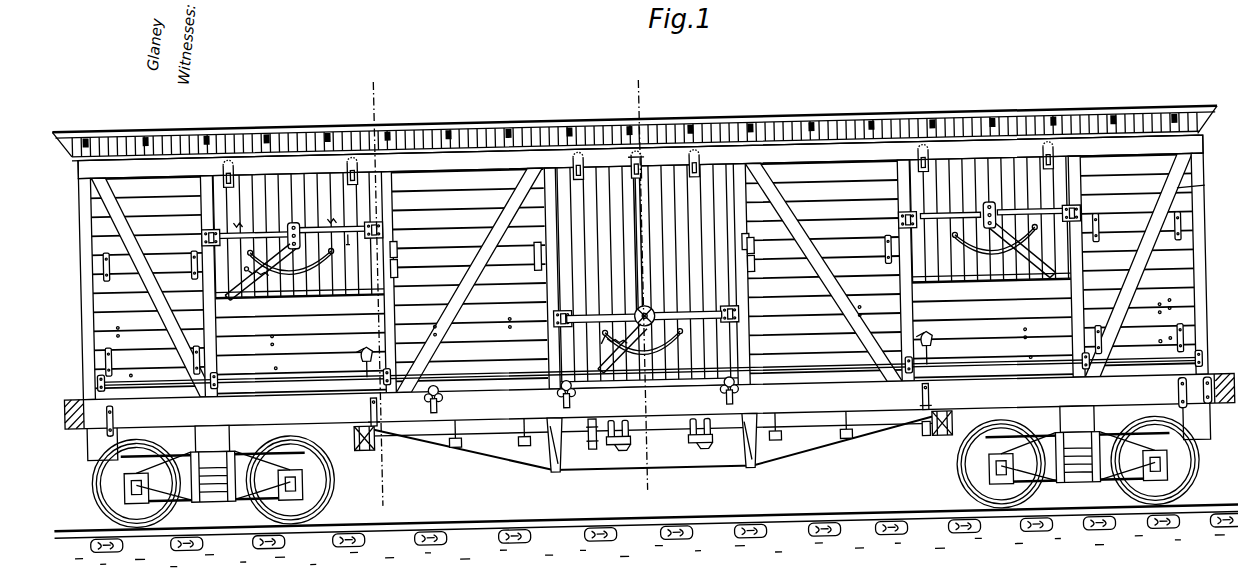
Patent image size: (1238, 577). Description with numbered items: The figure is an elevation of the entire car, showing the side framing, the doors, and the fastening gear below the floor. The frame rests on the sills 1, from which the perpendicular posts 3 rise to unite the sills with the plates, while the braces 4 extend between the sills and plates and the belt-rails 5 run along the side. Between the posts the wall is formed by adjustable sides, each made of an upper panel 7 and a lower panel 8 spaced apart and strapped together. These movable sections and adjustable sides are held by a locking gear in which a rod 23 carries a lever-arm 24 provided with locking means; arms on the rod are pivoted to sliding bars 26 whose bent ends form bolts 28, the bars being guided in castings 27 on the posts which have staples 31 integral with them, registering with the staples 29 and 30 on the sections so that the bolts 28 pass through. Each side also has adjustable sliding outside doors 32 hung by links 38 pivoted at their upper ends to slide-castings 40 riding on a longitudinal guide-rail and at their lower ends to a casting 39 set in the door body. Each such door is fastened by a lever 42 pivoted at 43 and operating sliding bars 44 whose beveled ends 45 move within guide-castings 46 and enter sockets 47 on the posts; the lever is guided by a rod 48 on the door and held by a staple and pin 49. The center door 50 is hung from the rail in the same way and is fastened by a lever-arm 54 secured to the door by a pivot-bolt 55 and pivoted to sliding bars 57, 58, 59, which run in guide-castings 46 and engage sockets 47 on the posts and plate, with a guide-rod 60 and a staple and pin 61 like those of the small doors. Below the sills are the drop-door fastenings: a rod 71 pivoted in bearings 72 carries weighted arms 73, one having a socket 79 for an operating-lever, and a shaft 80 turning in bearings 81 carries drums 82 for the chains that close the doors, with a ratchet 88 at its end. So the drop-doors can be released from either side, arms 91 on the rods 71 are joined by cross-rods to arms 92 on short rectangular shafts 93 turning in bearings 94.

The sills 1 is at (1026, 409).
The perpendicular posts 3 is at (95, 286).
The braces 4 is at (376, 64).
The belt-rails 5 is at (634, 74).
The upper panel 7 is at (1165, 318).
The lower panel 8 is at (1165, 354).
The rod 23 is at (307, 378).
The lever-arm 24 is at (361, 350).
The sliding bars 26 is at (384, 309).
The guide-castings 27 is at (400, 244).
The bolts 28 is at (757, 270).
The staples 29 is at (400, 262).
The staples 30 is at (1218, 334).
The staples 31 is at (192, 262).
The sliding outside doors 32 is at (641, 219).
The links 38 is at (588, 162).
The casting 39 is at (650, 160).
The slide-castings 40 is at (704, 162).
The lever 42 is at (236, 292).
The pivot 43 is at (291, 218).
The sliding bars 44 is at (290, 221).
The beveled ends 45 is at (348, 240).
The guide-castings 46 is at (729, 334).
The sockets 47 is at (206, 224).
The guide-rods 48 is at (310, 262).
The staple and pin 49 is at (265, 270).
The center door 50 is at (647, 318).
The lever-arm 54 is at (606, 374).
The pivot-bolt 55 is at (652, 309).
The sliding bar 57 is at (598, 313).
The sliding bar 58 is at (637, 227).
The sliding bar 59 is at (706, 313).
The guide-rod 60 is at (662, 345).
The staple and pin 61 is at (620, 347).
The rod 71 is at (410, 389).
The bearings 72 is at (368, 406).
The weighted arms 73 is at (517, 402).
The socket 79 is at (847, 401).
The shaft 80 is at (406, 436).
The bearings 81 is at (352, 433).
The drums 82 is at (926, 442).
The ratchet 88 is at (740, 448).
The arms 91 is at (585, 434).
The arms 92 is at (627, 428).
The short rectangular shafts 93 is at (610, 444).
The bearings 94 is at (620, 450).